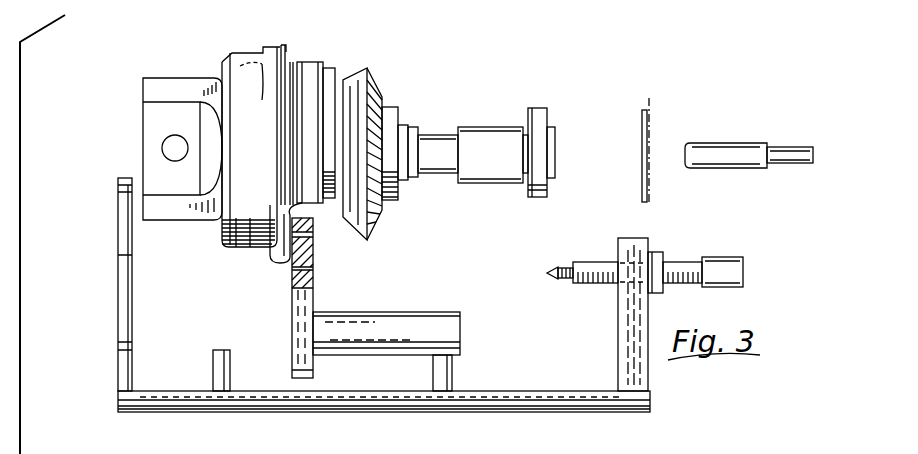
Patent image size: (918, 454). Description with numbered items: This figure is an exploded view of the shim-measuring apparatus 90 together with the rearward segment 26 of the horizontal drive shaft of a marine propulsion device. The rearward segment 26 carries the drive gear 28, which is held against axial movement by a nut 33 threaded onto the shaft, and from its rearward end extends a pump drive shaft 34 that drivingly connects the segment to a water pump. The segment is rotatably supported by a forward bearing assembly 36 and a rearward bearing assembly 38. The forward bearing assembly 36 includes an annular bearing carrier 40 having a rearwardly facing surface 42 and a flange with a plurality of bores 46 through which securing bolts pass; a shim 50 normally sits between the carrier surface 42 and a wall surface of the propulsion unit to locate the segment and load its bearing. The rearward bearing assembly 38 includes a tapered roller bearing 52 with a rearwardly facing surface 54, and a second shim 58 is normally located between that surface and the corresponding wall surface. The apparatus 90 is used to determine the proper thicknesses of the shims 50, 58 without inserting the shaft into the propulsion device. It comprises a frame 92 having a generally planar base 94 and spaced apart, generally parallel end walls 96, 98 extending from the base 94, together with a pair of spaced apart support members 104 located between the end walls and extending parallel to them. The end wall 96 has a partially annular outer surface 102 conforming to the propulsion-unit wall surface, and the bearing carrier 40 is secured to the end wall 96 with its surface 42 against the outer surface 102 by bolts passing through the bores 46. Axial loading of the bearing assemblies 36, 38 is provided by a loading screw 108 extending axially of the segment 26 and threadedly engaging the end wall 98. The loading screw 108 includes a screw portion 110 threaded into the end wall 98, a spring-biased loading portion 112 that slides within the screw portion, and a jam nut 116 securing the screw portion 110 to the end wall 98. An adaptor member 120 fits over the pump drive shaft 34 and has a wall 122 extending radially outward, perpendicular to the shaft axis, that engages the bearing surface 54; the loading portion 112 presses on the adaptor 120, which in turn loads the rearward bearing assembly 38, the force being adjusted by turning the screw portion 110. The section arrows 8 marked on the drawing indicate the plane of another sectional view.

The section line arrows 8 is at (592, 262).
The rearward segment 26 is at (434, 135).
The drive gear 28 is at (370, 84).
The nut 33 is at (390, 110).
The pump drive shaft 34 is at (741, 146).
The forward bearing assembly 36 is at (251, 272).
The rearward bearing assembly 38 is at (553, 93).
The bearing carrier 40 is at (222, 236).
The rearwardly facing surface 42 is at (292, 52).
The bores 46 is at (243, 52).
The shim 50 is at (282, 143).
The tapered roller bearing 52 is at (537, 108).
The rearwardly facing surface 54 is at (549, 122).
The second shim 58 is at (650, 112).
The apparatus 90 is at (410, 400).
The frame 92 is at (573, 396).
The base 94 is at (632, 405).
The end wall 96 is at (120, 283).
The end wall 98 is at (628, 317).
The partially annular outer surface 102 is at (118, 214).
The support members 104 is at (215, 362).
The loading screw 108 is at (665, 295).
The screw portion 110 is at (707, 274).
The loading portion 112 is at (548, 279).
The jam nut 116 is at (665, 255).
The adaptor member 120 is at (408, 320).
The wall 122 is at (298, 315).